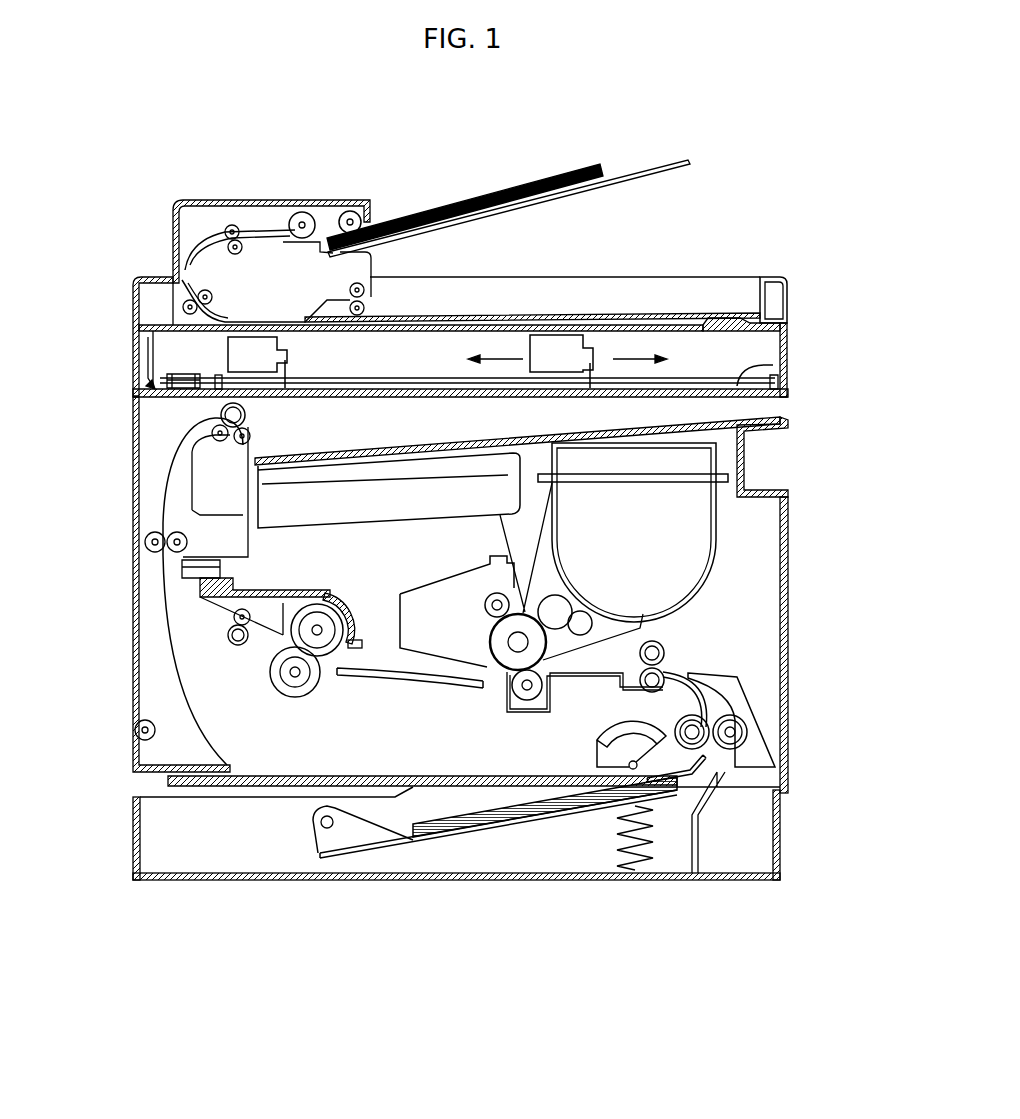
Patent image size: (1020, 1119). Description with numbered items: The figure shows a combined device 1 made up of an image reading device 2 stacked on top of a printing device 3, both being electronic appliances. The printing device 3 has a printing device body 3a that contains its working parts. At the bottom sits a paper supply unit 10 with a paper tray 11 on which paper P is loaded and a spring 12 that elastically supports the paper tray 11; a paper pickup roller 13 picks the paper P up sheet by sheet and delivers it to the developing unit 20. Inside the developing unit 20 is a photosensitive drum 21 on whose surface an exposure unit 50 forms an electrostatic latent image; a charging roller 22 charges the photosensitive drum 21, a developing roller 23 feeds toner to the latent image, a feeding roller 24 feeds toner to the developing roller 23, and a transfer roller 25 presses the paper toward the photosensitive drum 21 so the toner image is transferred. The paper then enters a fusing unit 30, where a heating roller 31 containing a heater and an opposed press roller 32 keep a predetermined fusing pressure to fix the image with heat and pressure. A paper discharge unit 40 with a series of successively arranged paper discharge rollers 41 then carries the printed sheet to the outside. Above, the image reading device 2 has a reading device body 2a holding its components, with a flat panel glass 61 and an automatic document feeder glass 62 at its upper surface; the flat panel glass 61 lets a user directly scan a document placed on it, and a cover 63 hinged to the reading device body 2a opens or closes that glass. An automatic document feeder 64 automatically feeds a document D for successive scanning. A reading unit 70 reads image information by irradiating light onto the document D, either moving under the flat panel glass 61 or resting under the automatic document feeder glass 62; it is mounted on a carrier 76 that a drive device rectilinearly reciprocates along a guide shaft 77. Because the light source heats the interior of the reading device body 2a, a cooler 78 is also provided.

The combined device 1 is at (447, 992).
The image reading device 2 is at (810, 343).
The reading device body 2a is at (133, 367).
The printing device 3 is at (812, 556).
The printing device body 3a is at (130, 653).
The paper supply unit 10 is at (558, 830).
The paper tray 11 is at (457, 833).
The spring 12 is at (637, 860).
The paper pickup roller 13 is at (600, 753).
The developing unit 20 is at (730, 580).
The photosensitive drum 21 is at (493, 640).
The charging roller 22 is at (488, 603).
The developing roller 23 is at (545, 600).
The feeding roller 24 is at (585, 610).
The transfer roller 25 is at (510, 692).
The fusing unit 30 is at (347, 668).
The heating roller 31 is at (324, 592).
The press roller 32 is at (298, 690).
The paper discharge unit 40 is at (152, 570).
The paper discharge rollers 41 is at (247, 412).
The exposure unit 50 is at (385, 516).
The flat panel glass 61 is at (635, 327).
The automatic document feeder (ADF) glass 62 is at (247, 317).
The cover 63 is at (777, 273).
The automatic document feeder (ADF) 64 is at (328, 210).
The reading unit 70 is at (283, 353).
The carrier 76 is at (287, 370).
The guide shaft 77 is at (790, 373).
The cooler 78 is at (137, 392).
The document D is at (503, 197).
The paper P is at (470, 807).